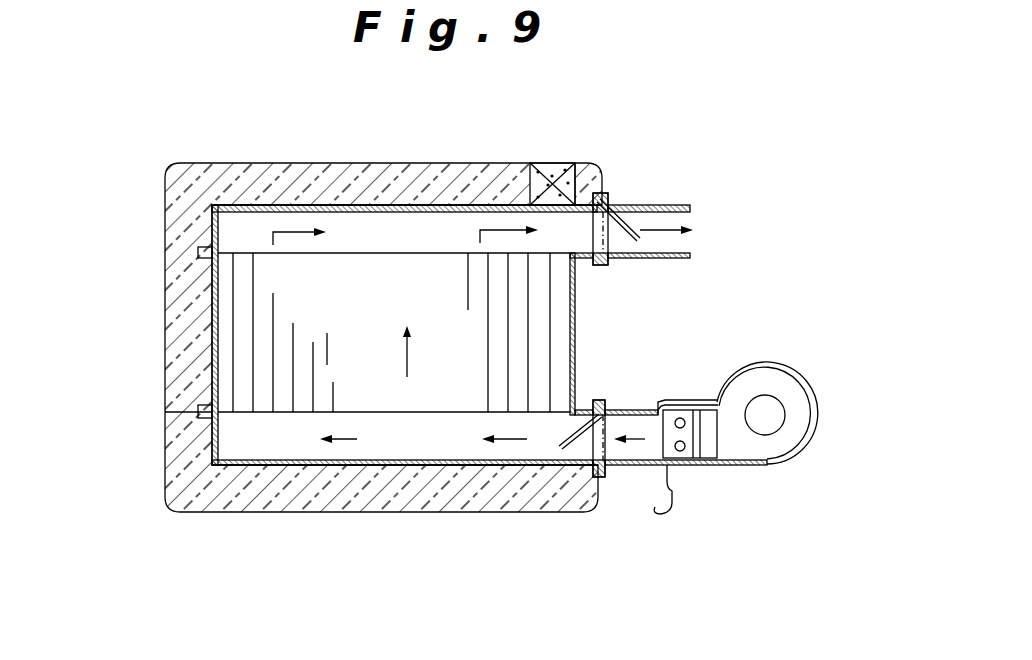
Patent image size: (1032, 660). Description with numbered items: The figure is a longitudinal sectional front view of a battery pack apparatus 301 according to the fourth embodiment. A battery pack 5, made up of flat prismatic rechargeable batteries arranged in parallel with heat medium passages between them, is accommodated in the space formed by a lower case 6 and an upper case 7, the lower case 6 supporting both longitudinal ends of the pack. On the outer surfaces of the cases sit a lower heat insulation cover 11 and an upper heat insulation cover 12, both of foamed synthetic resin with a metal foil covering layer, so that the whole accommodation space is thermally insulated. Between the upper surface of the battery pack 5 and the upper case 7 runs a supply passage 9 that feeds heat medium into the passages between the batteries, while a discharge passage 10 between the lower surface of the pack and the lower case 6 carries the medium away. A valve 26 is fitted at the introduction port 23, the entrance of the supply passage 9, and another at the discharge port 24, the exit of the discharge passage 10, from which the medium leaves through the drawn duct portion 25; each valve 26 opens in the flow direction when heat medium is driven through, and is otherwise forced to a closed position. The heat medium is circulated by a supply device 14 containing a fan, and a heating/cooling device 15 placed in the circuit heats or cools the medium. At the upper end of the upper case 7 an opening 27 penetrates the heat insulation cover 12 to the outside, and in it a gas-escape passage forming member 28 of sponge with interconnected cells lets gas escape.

The battery pack apparatus 301 is at (152, 165).
The upper heat insulation cover 12 is at (303, 190).
The upper case 7 is at (388, 203).
The battery pack 5 is at (416, 255).
The discharge passage 10 is at (463, 230).
The gas-escape passage forming member 28 is at (553, 182).
The opening 27 is at (560, 172).
The discharge port 24 is at (607, 202).
The valve 26 is at (642, 230).
The upper pipe 25 is at (673, 203).
The lower heat insulation cover 11 is at (333, 492).
The lower case 6 is at (408, 466).
The supply passage 9 is at (453, 440).
The introduction port 23 is at (591, 470).
The heating/cooling device 15 is at (702, 466).
The supply device 14 is at (778, 445).